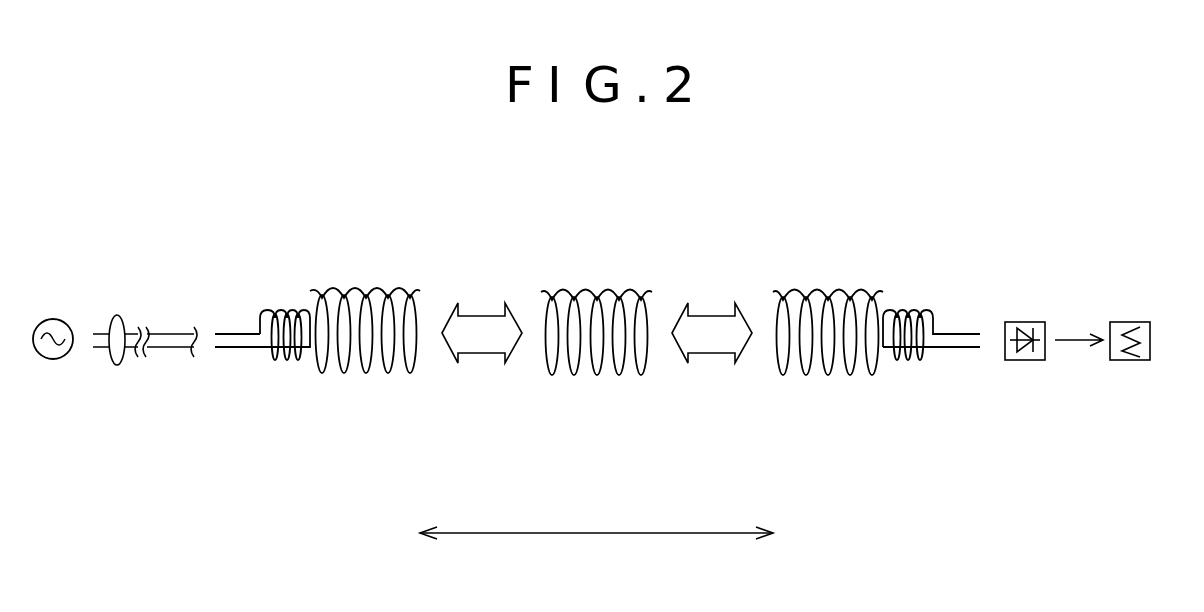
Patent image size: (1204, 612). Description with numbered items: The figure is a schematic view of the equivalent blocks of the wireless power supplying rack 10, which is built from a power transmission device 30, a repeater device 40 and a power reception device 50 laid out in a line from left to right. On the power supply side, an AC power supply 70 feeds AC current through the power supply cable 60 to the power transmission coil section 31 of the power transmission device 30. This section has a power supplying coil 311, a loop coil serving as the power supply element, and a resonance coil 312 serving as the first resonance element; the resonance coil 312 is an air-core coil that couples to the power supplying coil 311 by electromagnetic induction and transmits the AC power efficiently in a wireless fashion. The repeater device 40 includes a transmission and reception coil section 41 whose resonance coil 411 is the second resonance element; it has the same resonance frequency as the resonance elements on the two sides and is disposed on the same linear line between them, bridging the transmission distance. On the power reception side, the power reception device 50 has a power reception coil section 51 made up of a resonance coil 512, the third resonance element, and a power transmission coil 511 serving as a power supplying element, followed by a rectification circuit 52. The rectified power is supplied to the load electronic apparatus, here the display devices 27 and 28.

The wireless power supplying rack 10 is at (613, 165).
The power transmission device 30 is at (420, 443).
The AC power supply 70 is at (53, 318).
The power supply cable 60 is at (164, 333).
The power transmission coil section 31 is at (363, 275).
The power supplying coil 311 is at (272, 365).
The resonance coil 312 is at (366, 374).
The transmission and reception coil section 41 is at (597, 275).
The resonance coil 411 is at (596, 375).
The repeater device 40 is at (613, 519).
The power reception device 50 is at (1162, 443).
The power reception coil section 51 is at (828, 275).
The resonance coil 512 is at (827, 375).
The power transmission coil 511 is at (920, 364).
The rectification circuit 52 is at (1025, 322).
The display device 27 is at (1145, 315).
The display device 28 is at (1130, 322).